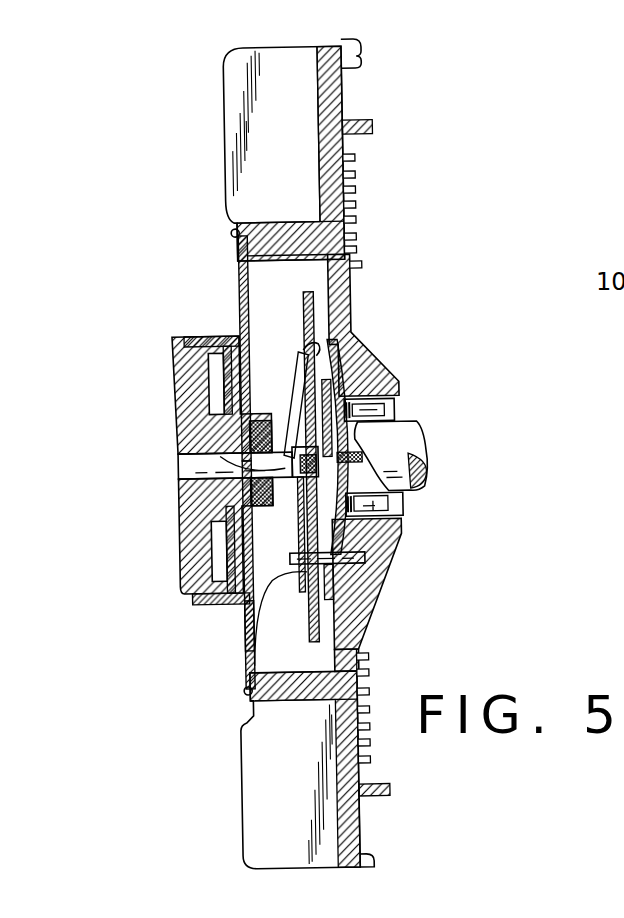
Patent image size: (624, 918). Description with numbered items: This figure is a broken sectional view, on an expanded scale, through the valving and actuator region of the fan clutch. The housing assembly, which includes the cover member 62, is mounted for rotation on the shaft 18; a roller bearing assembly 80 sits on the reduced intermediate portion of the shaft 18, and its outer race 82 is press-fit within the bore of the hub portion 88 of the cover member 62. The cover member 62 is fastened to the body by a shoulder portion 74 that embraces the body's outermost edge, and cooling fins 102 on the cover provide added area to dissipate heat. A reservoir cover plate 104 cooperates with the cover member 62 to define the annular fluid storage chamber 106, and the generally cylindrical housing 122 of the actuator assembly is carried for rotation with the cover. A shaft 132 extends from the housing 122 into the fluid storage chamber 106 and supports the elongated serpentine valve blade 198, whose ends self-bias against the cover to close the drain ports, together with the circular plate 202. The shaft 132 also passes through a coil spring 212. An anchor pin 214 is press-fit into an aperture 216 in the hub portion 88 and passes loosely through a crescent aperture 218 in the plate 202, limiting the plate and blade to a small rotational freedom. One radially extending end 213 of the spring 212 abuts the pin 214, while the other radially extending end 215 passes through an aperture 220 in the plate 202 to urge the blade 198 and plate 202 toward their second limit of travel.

The cover member 62 is at (252, 90).
The reservoir cover plate 104 is at (234, 236).
The circular plate 202 is at (246, 266).
The aperture 220 is at (318, 345).
The valve blade 198 is at (293, 393).
The housing 122 is at (200, 383).
The coil spring 212 is at (176, 428).
The shaft 132 is at (180, 458).
The radially extending end 215 is at (335, 348).
The hub portion 88 is at (370, 378).
The outer race 82 is at (400, 411).
The shaft 18 is at (402, 440).
The roller bearing assembly 80 is at (386, 523).
The aperture 216 is at (378, 563).
The crescent aperture 218 is at (352, 608).
The fluid storage chamber 106 is at (314, 661).
The anchor pin 214 is at (247, 634).
The radially extending end 213 is at (250, 664).
The cooling fins 102 is at (277, 807).
The shoulder portion 74 is at (363, 858).